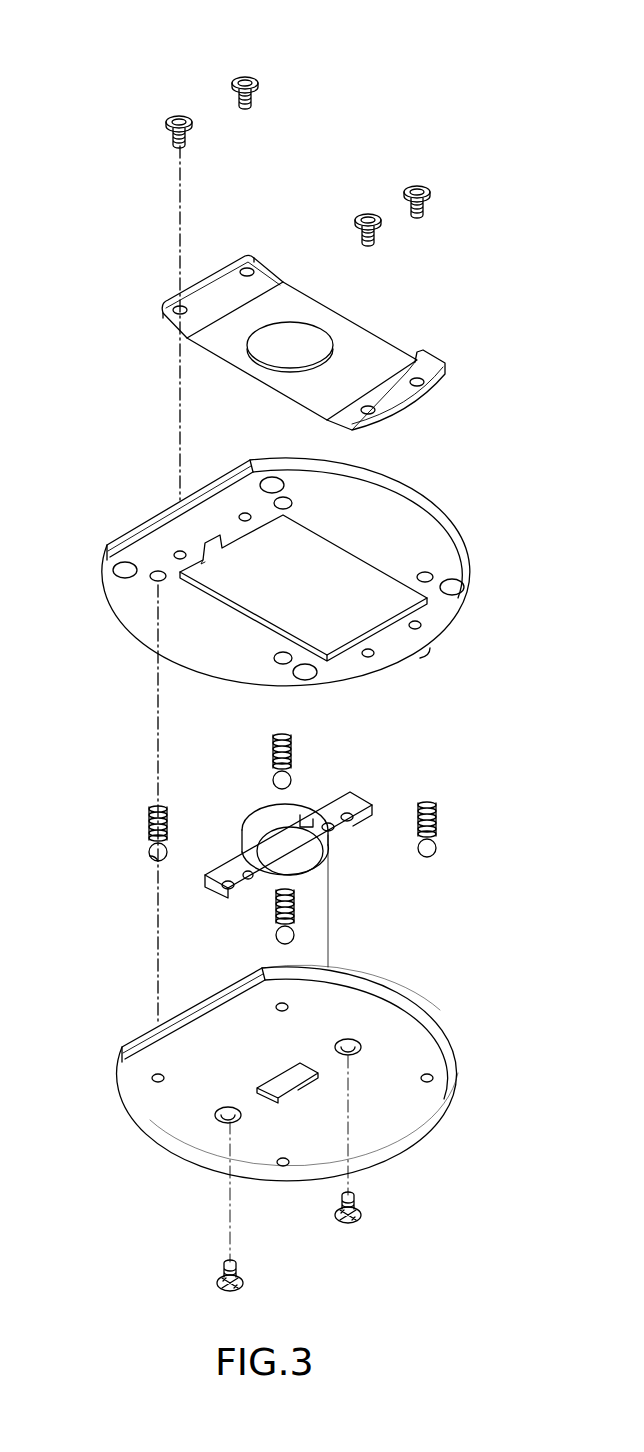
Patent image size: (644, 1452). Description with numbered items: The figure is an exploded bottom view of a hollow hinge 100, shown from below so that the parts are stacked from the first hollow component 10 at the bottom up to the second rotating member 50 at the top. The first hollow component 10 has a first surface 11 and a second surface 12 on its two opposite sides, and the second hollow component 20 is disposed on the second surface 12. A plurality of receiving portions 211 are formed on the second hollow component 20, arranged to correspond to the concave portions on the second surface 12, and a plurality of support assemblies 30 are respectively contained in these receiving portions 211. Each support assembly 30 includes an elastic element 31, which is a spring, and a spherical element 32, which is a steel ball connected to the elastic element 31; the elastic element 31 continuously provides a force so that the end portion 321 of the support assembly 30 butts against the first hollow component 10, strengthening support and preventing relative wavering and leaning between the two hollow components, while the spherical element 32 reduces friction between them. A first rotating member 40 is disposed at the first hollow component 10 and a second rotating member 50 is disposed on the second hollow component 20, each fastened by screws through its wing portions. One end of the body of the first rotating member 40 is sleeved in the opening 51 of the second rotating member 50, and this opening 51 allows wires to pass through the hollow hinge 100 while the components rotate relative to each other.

The hollow hinge 100 is at (109, 82).
The second rotating member 50 is at (373, 356).
The opening 51 is at (312, 338).
The second hollow component 20 is at (440, 541).
The receiving portions 211 is at (153, 584).
The support assemblies 30 is at (140, 805).
The elastic element 31 is at (148, 820).
The spherical element 32 is at (150, 849).
The end portion 321 is at (152, 862).
The first rotating member 40 is at (364, 800).
The second surface 12 is at (380, 975).
The first hollow component 10 is at (440, 1102).
The first surface 11 is at (400, 1138).